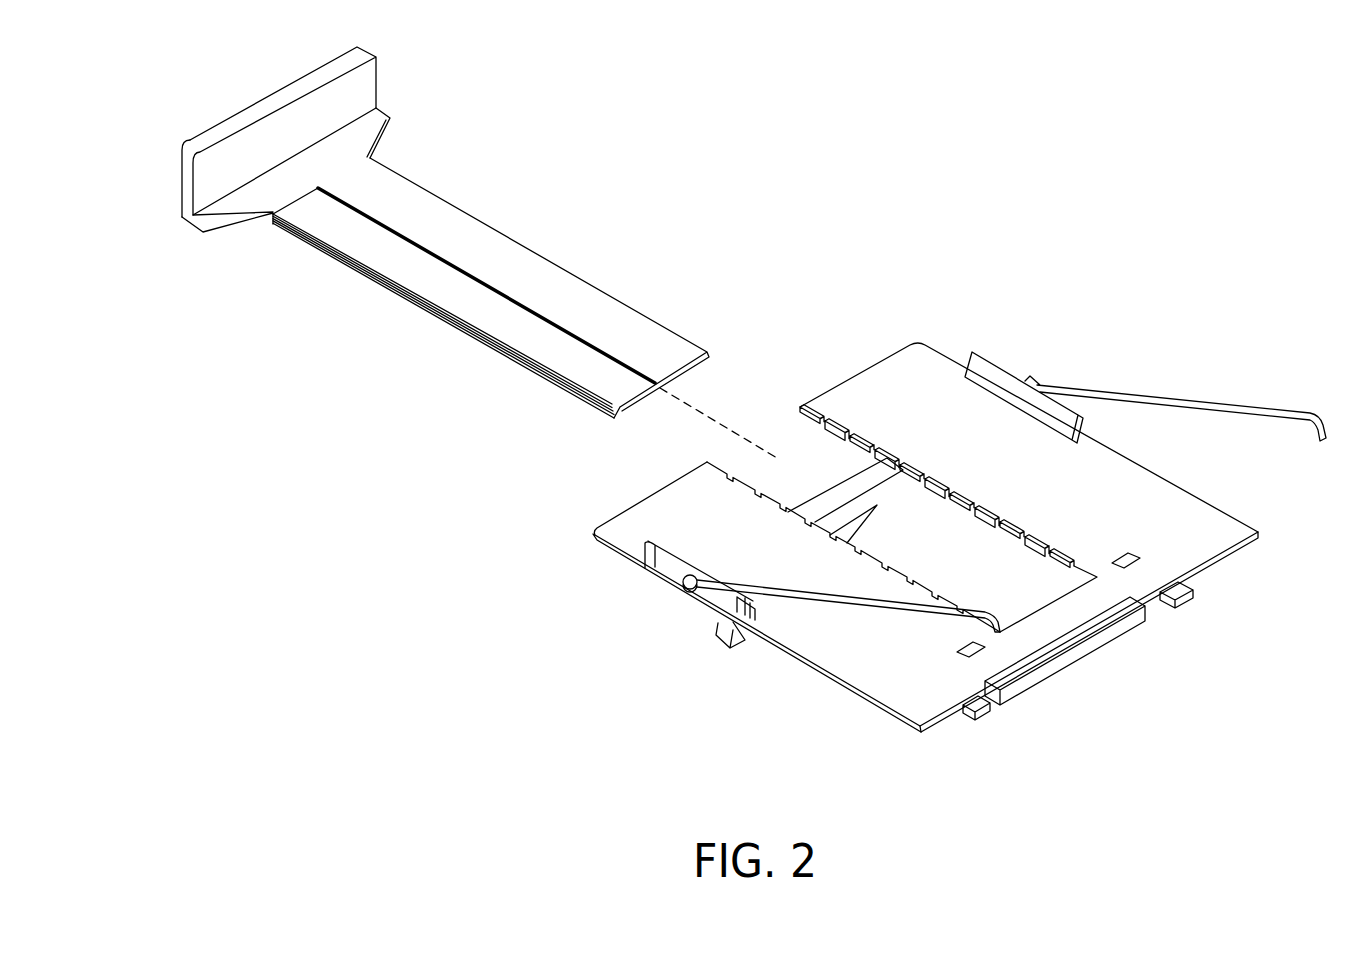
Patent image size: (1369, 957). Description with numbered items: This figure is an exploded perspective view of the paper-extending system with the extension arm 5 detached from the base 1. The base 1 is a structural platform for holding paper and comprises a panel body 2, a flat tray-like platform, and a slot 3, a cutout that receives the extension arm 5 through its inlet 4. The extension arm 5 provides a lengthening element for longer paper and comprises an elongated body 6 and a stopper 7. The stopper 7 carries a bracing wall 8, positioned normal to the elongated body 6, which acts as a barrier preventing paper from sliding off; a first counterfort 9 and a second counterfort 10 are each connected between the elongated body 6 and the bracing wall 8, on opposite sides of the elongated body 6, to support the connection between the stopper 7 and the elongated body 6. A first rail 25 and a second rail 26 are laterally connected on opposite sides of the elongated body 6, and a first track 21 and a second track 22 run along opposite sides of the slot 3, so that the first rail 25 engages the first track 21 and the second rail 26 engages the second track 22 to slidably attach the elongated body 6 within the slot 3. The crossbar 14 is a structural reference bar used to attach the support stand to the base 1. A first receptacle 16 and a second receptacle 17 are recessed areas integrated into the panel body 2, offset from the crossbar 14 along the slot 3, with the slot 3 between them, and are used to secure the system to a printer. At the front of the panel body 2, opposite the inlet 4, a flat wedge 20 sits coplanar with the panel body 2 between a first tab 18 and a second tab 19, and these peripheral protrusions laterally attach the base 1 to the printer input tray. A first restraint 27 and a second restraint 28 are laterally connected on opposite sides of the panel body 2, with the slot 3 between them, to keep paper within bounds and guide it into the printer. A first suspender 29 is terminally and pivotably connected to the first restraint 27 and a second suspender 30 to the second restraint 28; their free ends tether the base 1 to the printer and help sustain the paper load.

The base 1 is at (940, 556).
The panel body 2 is at (925, 556).
The slot 3 is at (740, 448).
The inlet 4 is at (1001, 487).
The extension arm 5 is at (421, 247).
The elongated body 6 is at (491, 303).
The stopper 7 is at (318, 171).
The bracing wall 8 is at (197, 187).
The first counterfort 9 is at (387, 138).
The second counterfort 10 is at (240, 223).
The crossbar 14 is at (878, 498).
The first receptacle 16 is at (1125, 558).
The second receptacle 17 is at (970, 648).
The first tab 18 is at (1185, 597).
The second tab 19 is at (987, 707).
The flat wedge 20 is at (1095, 650).
The first track 21 is at (955, 523).
The second track 22 is at (965, 585).
The first rail 25 is at (623, 297).
The second rail 26 is at (518, 380).
The first restraint 27 is at (1023, 405).
The second restraint 28 is at (683, 557).
The first suspender 29 is at (1193, 408).
The second suspender 30 is at (858, 602).